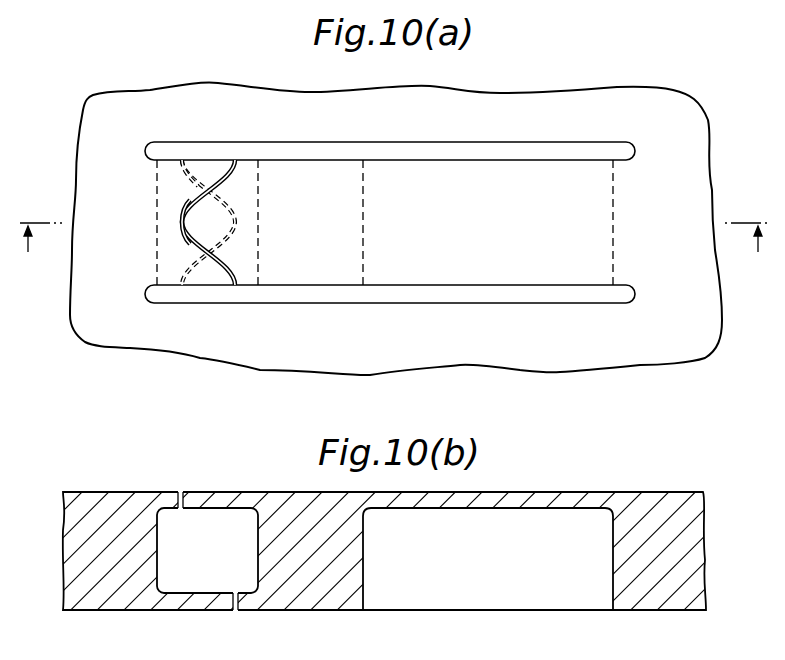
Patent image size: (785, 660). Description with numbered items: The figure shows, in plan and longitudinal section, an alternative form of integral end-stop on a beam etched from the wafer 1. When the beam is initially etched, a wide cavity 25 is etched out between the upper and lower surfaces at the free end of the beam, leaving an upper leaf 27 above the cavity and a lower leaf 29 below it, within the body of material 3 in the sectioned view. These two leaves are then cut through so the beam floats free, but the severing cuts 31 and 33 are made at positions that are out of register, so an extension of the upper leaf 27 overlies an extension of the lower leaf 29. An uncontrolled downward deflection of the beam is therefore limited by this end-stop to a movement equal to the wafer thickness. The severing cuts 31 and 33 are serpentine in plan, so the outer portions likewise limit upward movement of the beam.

In FIG. 10A, the wafer 1 is at (440, 119).
In FIG. 10B, the wafer 1 is at (597, 618).
In FIG. 10B, the substrate body 3 is at (328, 575).
In FIG. 10B, the wide cavity 25 is at (218, 561).
In FIG. 10A, the upper leaf 27 is at (220, 233).
In FIG. 10B, the upper leaf 27 is at (200, 500).
In FIG. 10A, the lower leaf 29 is at (231, 227).
In FIG. 10B, the lower leaf 29 is at (195, 605).
In FIG. 10A, the severing cut 31 is at (182, 221).
In FIG. 10B, the severing cut 31 is at (178, 492).
In FIG. 10A, the severing cut 33 is at (196, 178).
In FIG. 10B, the severing cut 33 is at (234, 602).